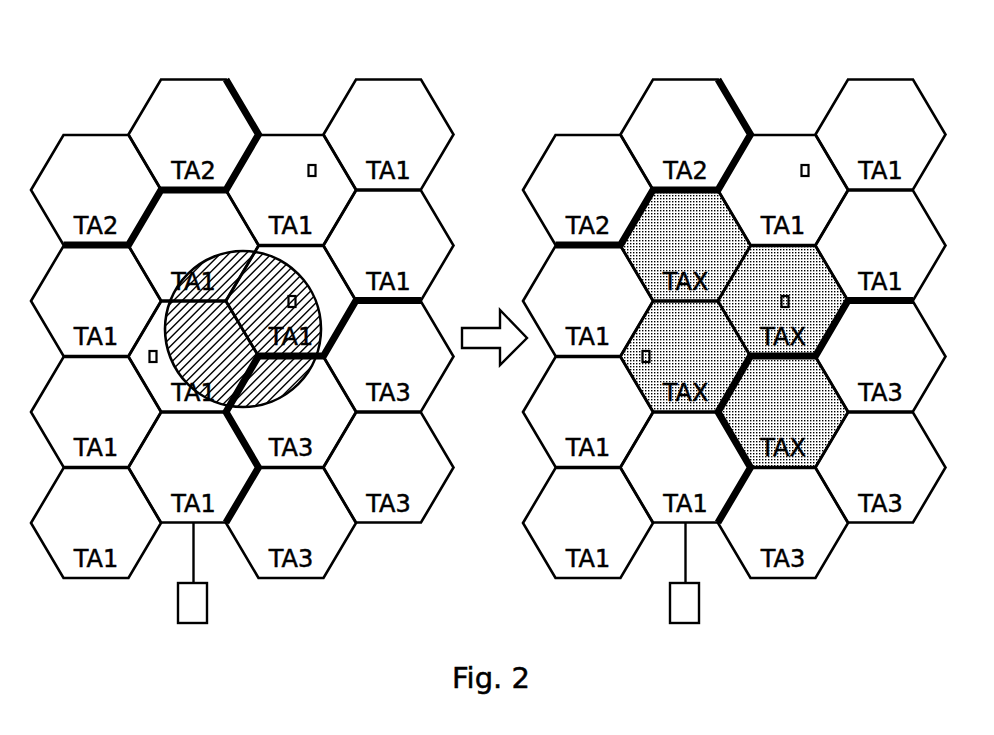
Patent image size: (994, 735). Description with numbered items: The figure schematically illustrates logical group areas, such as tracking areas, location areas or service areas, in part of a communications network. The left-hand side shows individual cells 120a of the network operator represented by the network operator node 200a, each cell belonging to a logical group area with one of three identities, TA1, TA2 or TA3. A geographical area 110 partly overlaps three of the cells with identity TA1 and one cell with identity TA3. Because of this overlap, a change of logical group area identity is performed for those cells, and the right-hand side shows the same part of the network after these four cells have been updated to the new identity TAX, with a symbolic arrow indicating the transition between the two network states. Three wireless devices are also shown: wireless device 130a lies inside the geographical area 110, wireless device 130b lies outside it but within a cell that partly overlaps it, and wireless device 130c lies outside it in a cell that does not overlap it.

The geographical area 110 is at (213, 257).
The cells 120a is at (281, 132).
The wireless device 130a is at (783, 296).
The wireless device 130b is at (158, 363).
The wireless device 130c is at (803, 166).
The network operator node 200a is at (207, 597).